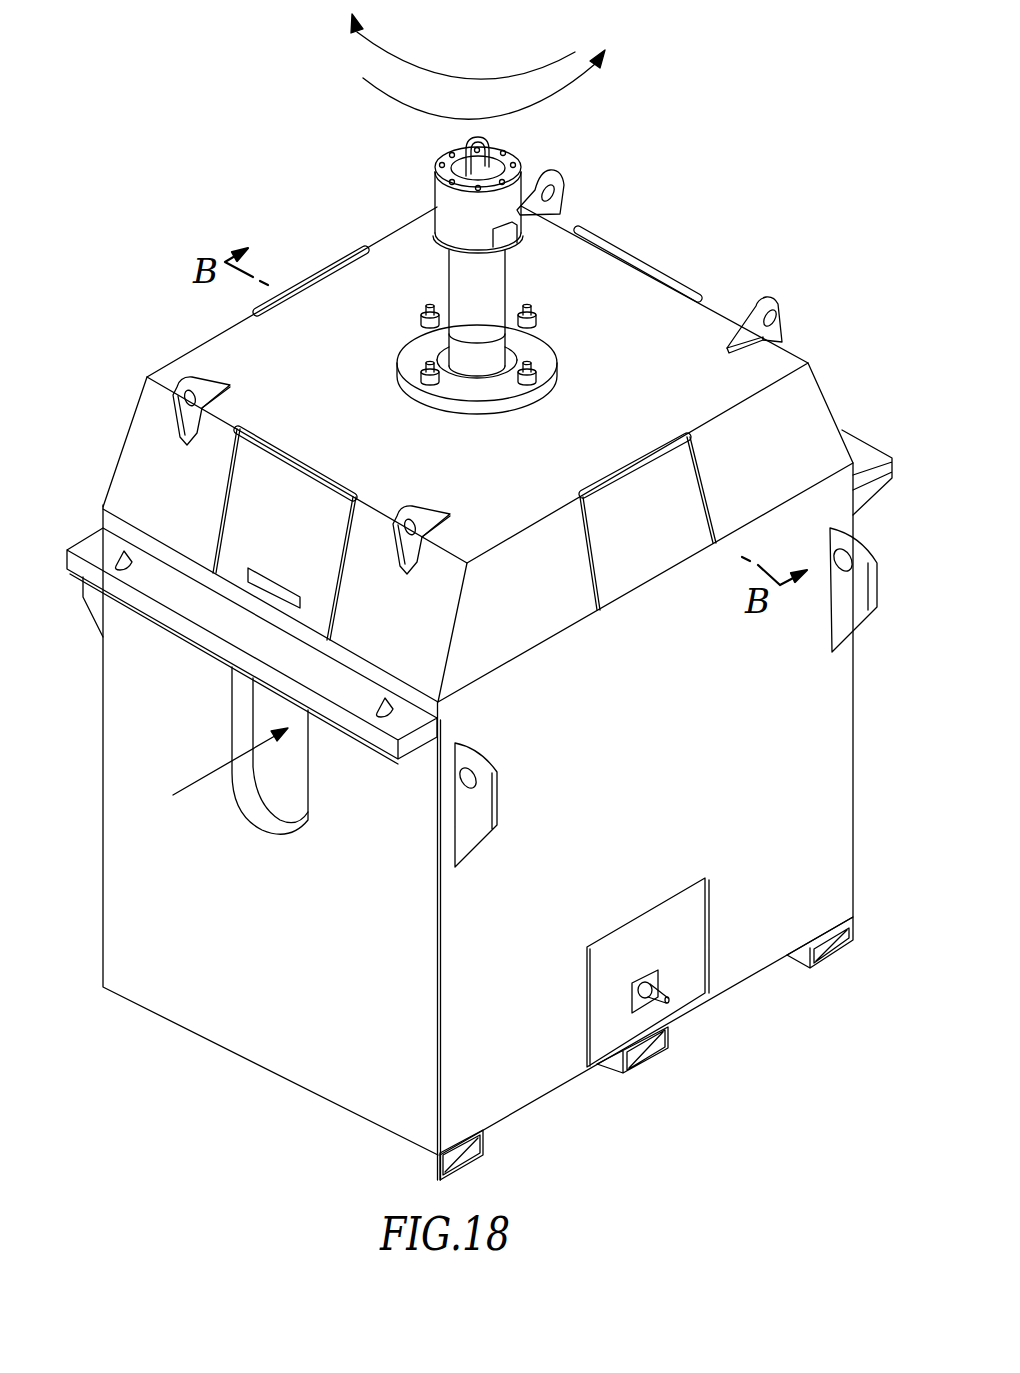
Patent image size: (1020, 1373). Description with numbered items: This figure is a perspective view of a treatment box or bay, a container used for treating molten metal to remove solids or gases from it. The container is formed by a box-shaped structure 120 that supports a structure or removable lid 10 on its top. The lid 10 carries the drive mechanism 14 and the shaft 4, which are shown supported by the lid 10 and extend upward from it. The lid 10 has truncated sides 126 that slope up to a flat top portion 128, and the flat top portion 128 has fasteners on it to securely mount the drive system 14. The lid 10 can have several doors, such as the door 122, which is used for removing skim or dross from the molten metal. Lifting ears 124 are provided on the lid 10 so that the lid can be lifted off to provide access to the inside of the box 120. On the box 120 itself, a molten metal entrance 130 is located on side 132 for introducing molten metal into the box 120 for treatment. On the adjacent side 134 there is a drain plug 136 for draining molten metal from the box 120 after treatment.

The shaft 4 is at (498, 277).
The removable lid 10 is at (625, 287).
The drive mechanism 14 is at (445, 202).
The box-shaped structure 120 is at (480, 649).
The door 122 is at (683, 502).
The lifting ears 124 is at (562, 185).
The truncated sides 126 is at (142, 422).
The flat top portion 128 is at (693, 333).
The molten metal entrance 130 is at (245, 705).
The side 132 is at (127, 845).
The side 134 is at (833, 800).
The drain plug 136 is at (667, 987).